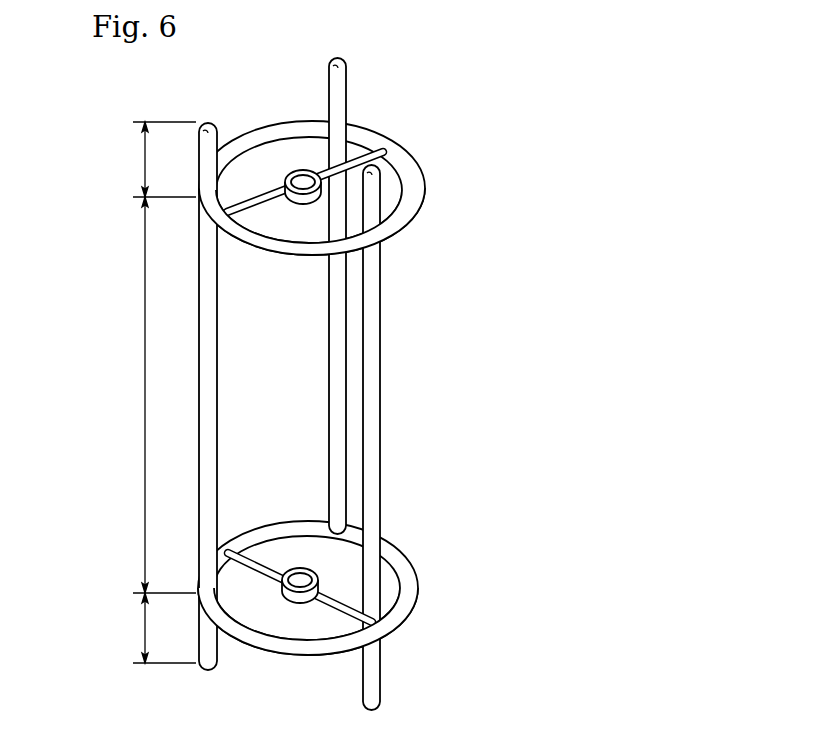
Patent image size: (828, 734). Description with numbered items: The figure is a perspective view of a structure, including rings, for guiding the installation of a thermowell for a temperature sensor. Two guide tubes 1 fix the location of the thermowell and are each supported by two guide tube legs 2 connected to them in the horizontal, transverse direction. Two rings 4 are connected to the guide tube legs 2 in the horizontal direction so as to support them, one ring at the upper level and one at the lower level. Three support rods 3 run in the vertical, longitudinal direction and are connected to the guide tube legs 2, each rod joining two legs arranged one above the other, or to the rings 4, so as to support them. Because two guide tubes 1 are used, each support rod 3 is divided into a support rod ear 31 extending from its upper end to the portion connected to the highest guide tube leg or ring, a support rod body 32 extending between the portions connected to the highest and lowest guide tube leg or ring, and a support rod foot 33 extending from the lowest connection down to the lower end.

The guide tube 1 is at (290, 172).
The guide tube leg 2 is at (367, 152).
The support rod 3 is at (378, 302).
The ring 4 is at (413, 185).
The support rod ear 31 is at (146, 159).
The support rod body 32 is at (122, 395).
The support rod foot 33 is at (146, 628).